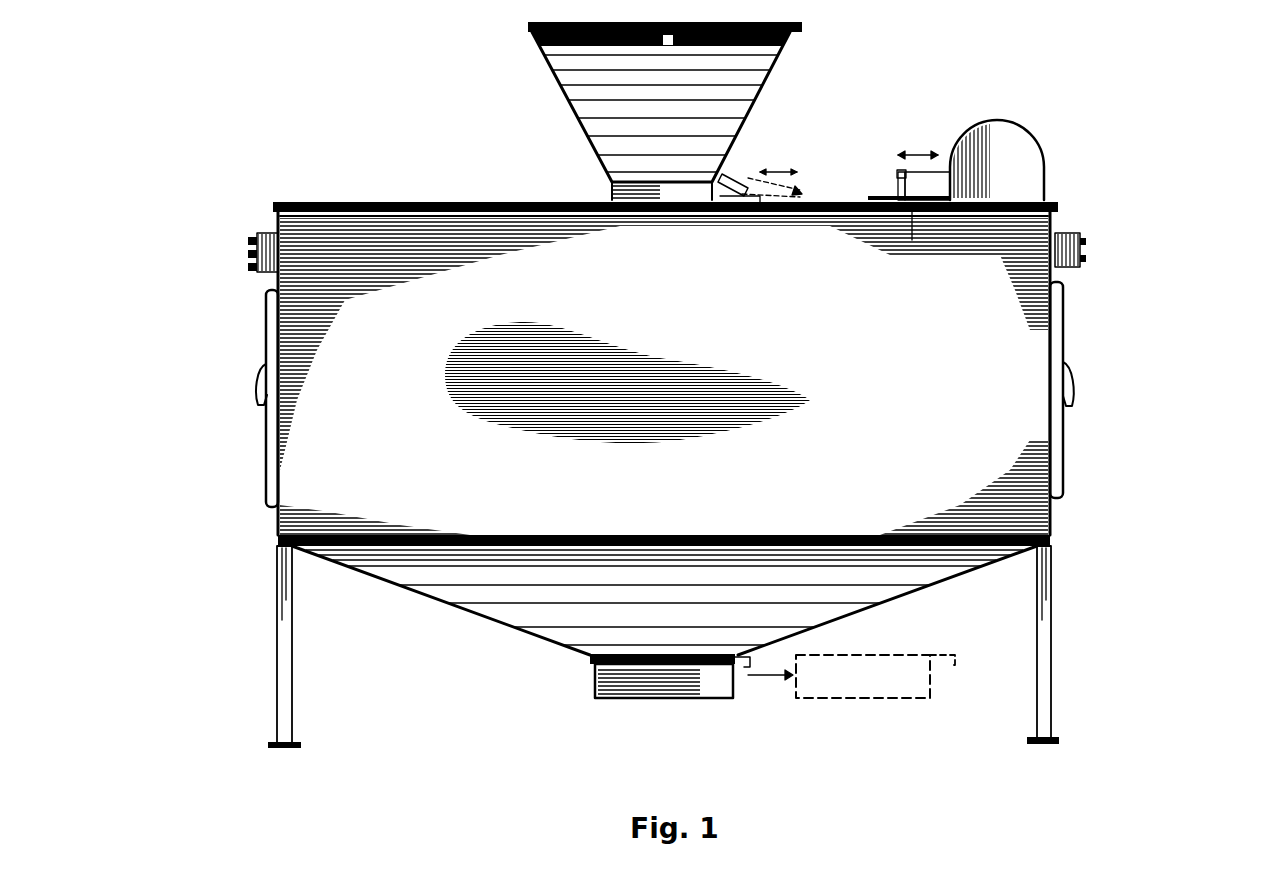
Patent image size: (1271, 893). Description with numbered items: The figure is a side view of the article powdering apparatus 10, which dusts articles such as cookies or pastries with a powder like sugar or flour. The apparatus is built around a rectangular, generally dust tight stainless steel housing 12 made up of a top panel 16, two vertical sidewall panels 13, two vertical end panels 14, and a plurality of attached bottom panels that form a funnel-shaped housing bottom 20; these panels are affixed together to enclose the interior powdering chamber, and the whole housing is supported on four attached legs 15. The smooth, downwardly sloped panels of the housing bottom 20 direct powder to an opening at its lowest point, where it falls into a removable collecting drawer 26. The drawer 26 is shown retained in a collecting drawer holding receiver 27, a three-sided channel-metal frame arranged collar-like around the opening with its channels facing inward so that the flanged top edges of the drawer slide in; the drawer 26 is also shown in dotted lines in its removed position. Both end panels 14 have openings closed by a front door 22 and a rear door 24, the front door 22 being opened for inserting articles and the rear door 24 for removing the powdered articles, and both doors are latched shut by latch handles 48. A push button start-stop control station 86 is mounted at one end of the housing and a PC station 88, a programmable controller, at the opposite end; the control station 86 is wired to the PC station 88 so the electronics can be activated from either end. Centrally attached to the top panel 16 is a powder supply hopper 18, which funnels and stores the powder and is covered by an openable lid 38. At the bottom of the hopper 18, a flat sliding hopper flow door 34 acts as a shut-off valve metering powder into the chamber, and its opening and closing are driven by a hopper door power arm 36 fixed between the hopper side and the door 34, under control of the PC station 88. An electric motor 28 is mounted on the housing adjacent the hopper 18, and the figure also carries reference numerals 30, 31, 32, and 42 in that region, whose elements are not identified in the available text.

The apparatus 10 is at (296, 158).
The housing 12 is at (398, 300).
The vertical sidewall panels 13 is at (1028, 441).
The vertical end panels 14 is at (277, 522).
The legs 15 is at (277, 668).
The top panel 16 is at (471, 203).
The powder supply hopper 18 is at (568, 108).
The funnel-shaped housing bottom 20 is at (447, 603).
The front door 22 is at (268, 332).
The rear door 24 is at (1064, 331).
The collecting drawer 26 is at (815, 698).
The collecting drawer holding receiver 27 is at (590, 657).
The electric motor 28 is at (1031, 135).
The dome base 30 is at (949, 166).
The adjustment travel 31 is at (903, 171).
The post 32 is at (897, 182).
The hopper flow door 34 is at (796, 190).
The hopper door power arm 36 is at (733, 173).
The openable lid 38 is at (528, 30).
The seam 42 is at (911, 202).
The latch handles 48 is at (256, 402).
The push button start-stop control station 86 is at (1085, 250).
The PC station 88 is at (257, 232).